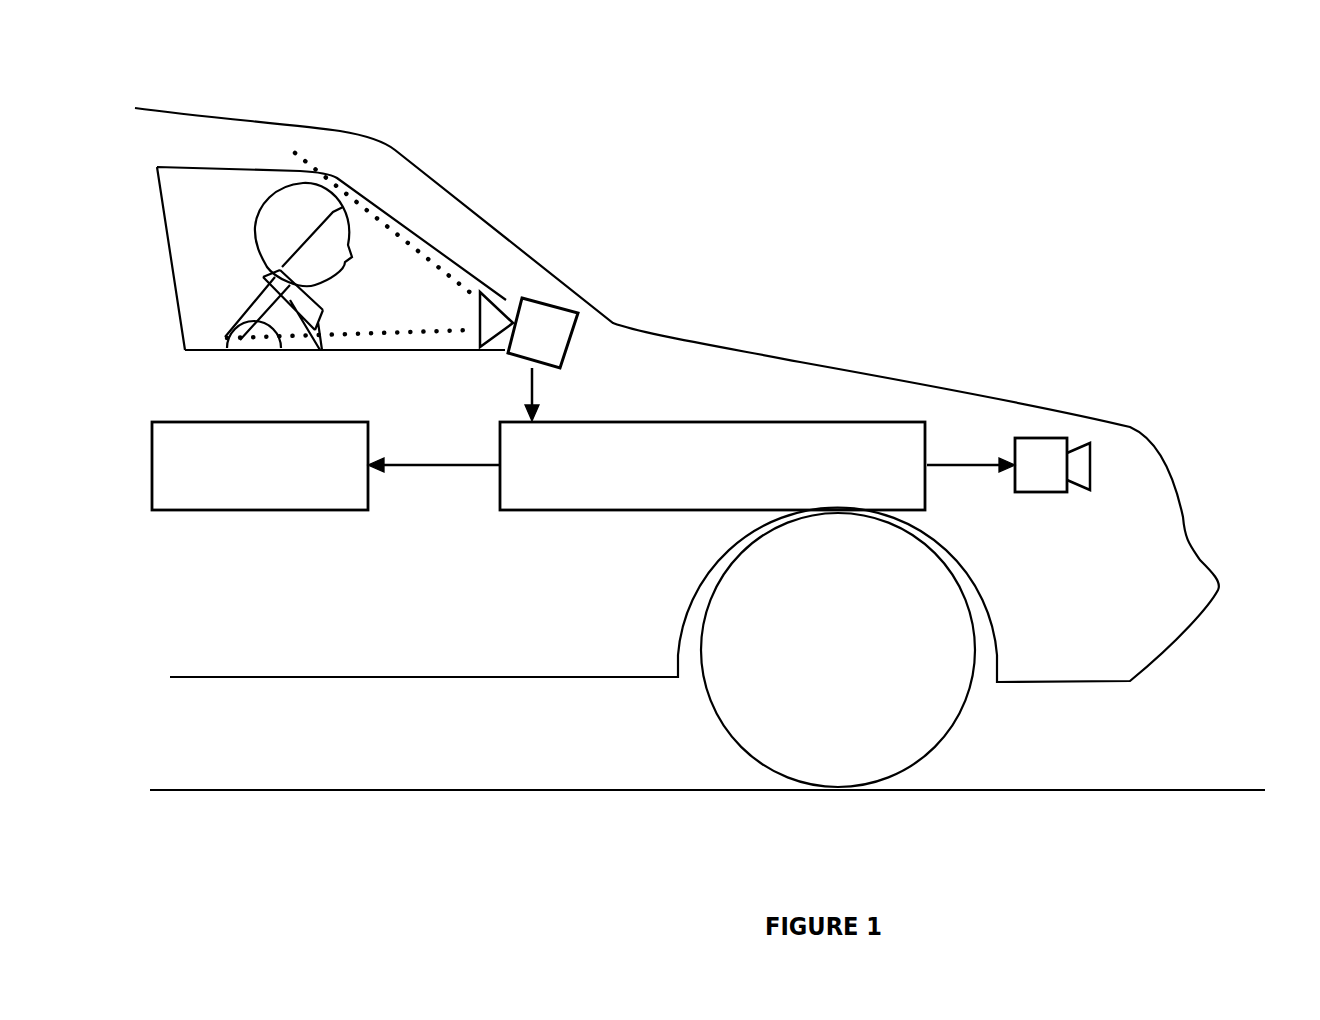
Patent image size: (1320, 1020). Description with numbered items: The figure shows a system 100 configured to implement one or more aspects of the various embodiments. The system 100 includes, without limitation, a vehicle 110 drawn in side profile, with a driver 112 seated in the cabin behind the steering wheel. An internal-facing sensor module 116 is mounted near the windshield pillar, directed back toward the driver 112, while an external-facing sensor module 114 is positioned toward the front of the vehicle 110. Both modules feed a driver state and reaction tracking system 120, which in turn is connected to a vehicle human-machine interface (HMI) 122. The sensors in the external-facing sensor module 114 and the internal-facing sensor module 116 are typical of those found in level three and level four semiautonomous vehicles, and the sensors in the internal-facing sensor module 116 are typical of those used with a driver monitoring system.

The system 100 is at (712, 73).
The vehicle 110 is at (304, 126).
The driver 112 is at (265, 203).
The external-facing sensor module 114 is at (1040, 437).
The internal-facing sensor module 116 is at (565, 308).
The driver state and reaction tracking system 120 is at (712, 466).
The vehicle human-machine interface (HMI) 122 is at (326, 466).